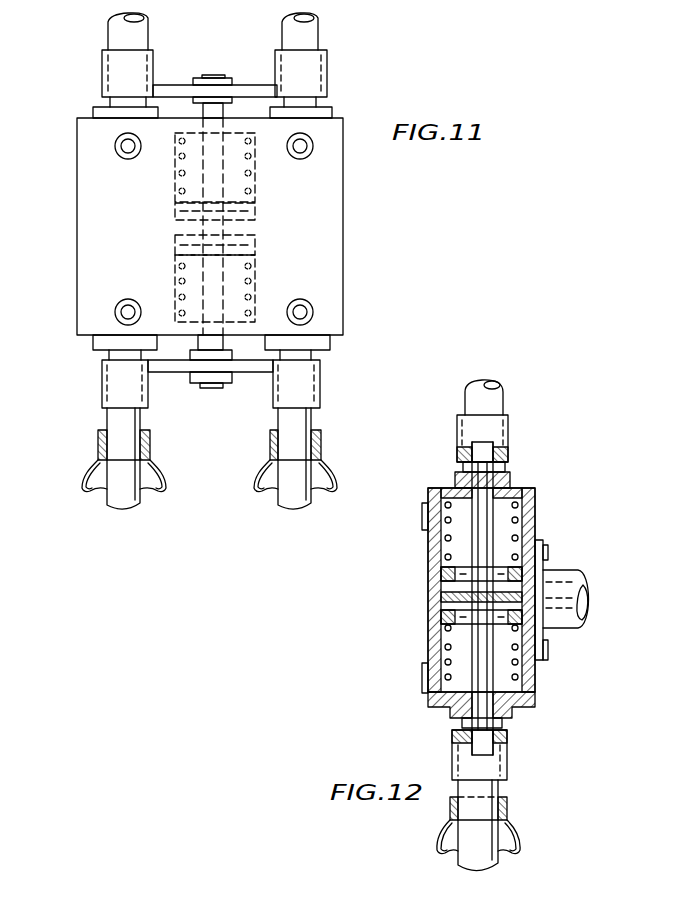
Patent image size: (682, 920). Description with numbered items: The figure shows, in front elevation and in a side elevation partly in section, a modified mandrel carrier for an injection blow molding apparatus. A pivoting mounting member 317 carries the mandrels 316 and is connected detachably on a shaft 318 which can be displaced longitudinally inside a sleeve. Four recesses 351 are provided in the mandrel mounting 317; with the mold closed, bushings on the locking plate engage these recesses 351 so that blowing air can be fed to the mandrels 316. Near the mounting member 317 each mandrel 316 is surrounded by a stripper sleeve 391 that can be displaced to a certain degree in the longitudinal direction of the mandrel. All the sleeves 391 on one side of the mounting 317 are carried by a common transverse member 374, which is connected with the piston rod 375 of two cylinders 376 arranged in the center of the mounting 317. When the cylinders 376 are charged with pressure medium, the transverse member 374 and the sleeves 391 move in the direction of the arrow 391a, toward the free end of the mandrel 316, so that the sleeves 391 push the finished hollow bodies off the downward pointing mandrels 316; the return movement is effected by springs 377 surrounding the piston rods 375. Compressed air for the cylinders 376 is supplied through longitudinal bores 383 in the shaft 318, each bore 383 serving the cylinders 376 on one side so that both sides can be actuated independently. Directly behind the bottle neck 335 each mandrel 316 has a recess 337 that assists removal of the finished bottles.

In FIG. 11, the mandrel 316 is at (305, 36).
In FIG. 12, the mandrel 316 is at (500, 393).
In FIG. 11, the pivoting mounting member 317 is at (343, 156).
In FIG. 12, the pivoting mounting member 317 is at (536, 496).
In FIG. 12, the shaft 318 is at (560, 615).
In FIG. 11, the bottle neck 335 is at (320, 442).
In FIG. 12, the bottle neck 335 is at (450, 806).
In FIG. 11, the recess 337 is at (322, 470).
In FIG. 11, the recess 351 is at (117, 142).
In FIG. 12, the recess 351 is at (422, 521).
In FIG. 11, the transverse member 374 is at (173, 87).
In FIG. 12, the transverse member 374 is at (508, 738).
In FIG. 11, the piston rod 375 is at (218, 151).
In FIG. 11, the cylinder 376 is at (176, 181).
In FIG. 12, the cylinder 376 is at (537, 518).
In FIG. 11, the spring 377 is at (251, 266).
In FIG. 12, the spring 377 is at (522, 656).
In FIG. 12, the longitudinal bore 383 is at (552, 600).
In FIG. 11, the sleeve 391 is at (310, 77).
In FIG. 12, the sleeve 391 is at (510, 427).
In FIG. 11, the arrow 391a is at (213, 22).